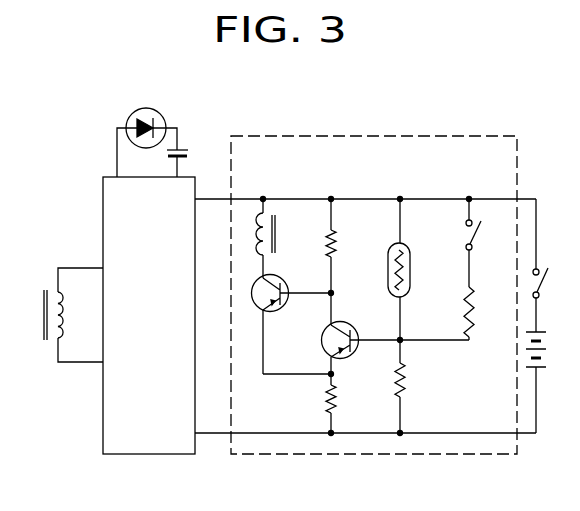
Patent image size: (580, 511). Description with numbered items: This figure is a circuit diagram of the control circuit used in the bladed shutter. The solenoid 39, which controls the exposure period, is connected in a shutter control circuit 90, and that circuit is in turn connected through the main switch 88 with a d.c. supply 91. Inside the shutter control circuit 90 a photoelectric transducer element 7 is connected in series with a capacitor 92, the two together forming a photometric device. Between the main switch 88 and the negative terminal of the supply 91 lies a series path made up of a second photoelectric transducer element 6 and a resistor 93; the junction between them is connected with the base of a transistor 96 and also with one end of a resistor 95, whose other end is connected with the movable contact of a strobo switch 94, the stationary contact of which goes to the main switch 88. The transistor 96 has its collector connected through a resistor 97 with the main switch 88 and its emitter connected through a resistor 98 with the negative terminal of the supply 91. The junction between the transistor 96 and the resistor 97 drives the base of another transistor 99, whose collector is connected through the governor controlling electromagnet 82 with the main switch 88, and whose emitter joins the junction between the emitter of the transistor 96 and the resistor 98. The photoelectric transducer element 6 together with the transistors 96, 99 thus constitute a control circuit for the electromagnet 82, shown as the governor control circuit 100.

The photoelectric transducer element 6 is at (410, 262).
The photoelectric transducer element 7 is at (151, 113).
The solenoid 39 is at (44, 320).
The governor controlling electromagnet 82 is at (277, 236).
The main switch 88 is at (543, 290).
The shutter control circuit 90 is at (163, 455).
The d.c. supply 91 is at (544, 351).
The capacitor 92 is at (188, 153).
The resistor 93 is at (405, 377).
The strobo switch 94 is at (477, 238).
The resistor 95 is at (462, 310).
The transistor 96 is at (352, 329).
The resistor 97 is at (337, 241).
The resistor 98 is at (336, 396).
The transistor 99 is at (283, 301).
The governor control circuit 100 is at (292, 455).